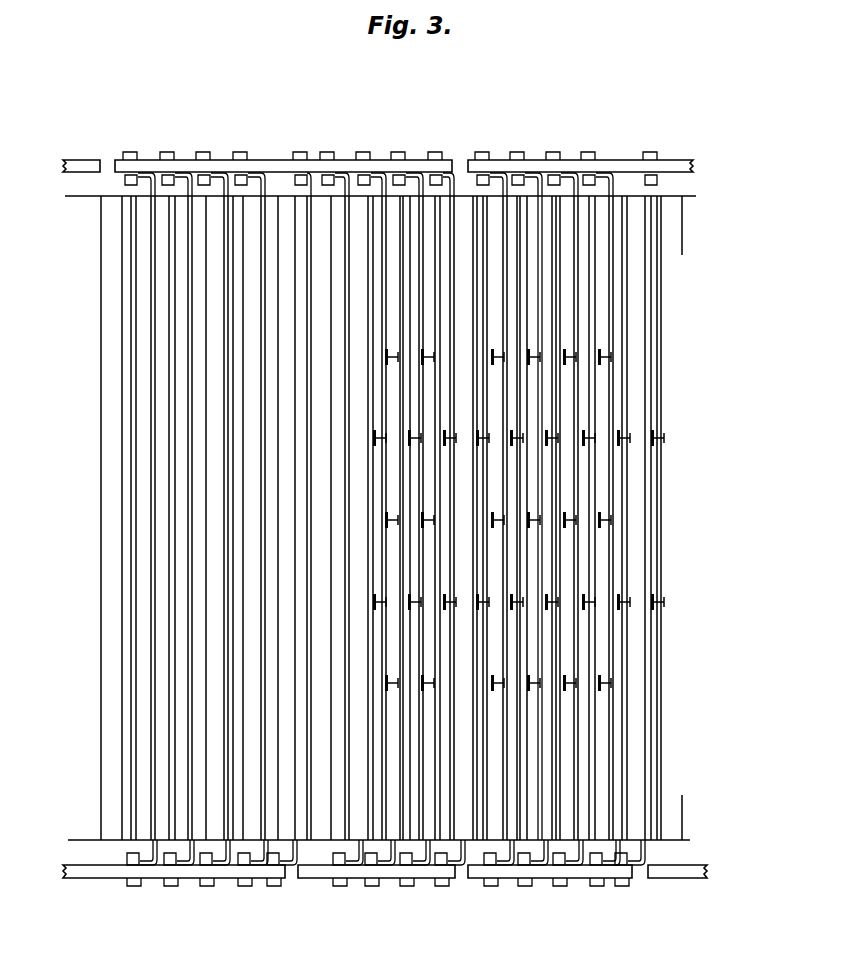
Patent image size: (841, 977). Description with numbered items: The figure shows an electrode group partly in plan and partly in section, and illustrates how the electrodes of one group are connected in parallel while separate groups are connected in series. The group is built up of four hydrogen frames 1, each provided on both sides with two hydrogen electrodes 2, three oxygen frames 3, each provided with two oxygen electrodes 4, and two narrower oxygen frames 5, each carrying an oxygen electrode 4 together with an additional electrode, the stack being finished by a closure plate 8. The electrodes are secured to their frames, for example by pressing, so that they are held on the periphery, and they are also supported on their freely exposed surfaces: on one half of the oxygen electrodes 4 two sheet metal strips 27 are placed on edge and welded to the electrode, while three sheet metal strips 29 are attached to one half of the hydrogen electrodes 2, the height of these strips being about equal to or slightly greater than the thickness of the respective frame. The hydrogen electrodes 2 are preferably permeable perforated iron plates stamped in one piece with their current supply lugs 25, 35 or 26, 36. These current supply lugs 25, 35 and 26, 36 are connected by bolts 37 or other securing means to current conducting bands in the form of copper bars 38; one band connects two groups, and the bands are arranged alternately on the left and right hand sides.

The hydrogen frame 1 is at (605, 222).
The hydrogen electrode 2 is at (575, 384).
The oxygen frame 3 is at (585, 722).
The oxygen electrode 4 is at (591, 458).
The narrower oxygen frame 5 is at (618, 815).
The closure plate 8 is at (465, 307).
The current supply lug 25 is at (591, 863).
The current supply lug 26 is at (432, 864).
The sheet metal strip 27 is at (588, 605).
The sheet metal strip 29 is at (572, 521).
The current supply lug 35 is at (588, 862).
The current supply lug 36 is at (447, 864).
The bolt 37 is at (524, 886).
The copper bar 38 is at (357, 872).